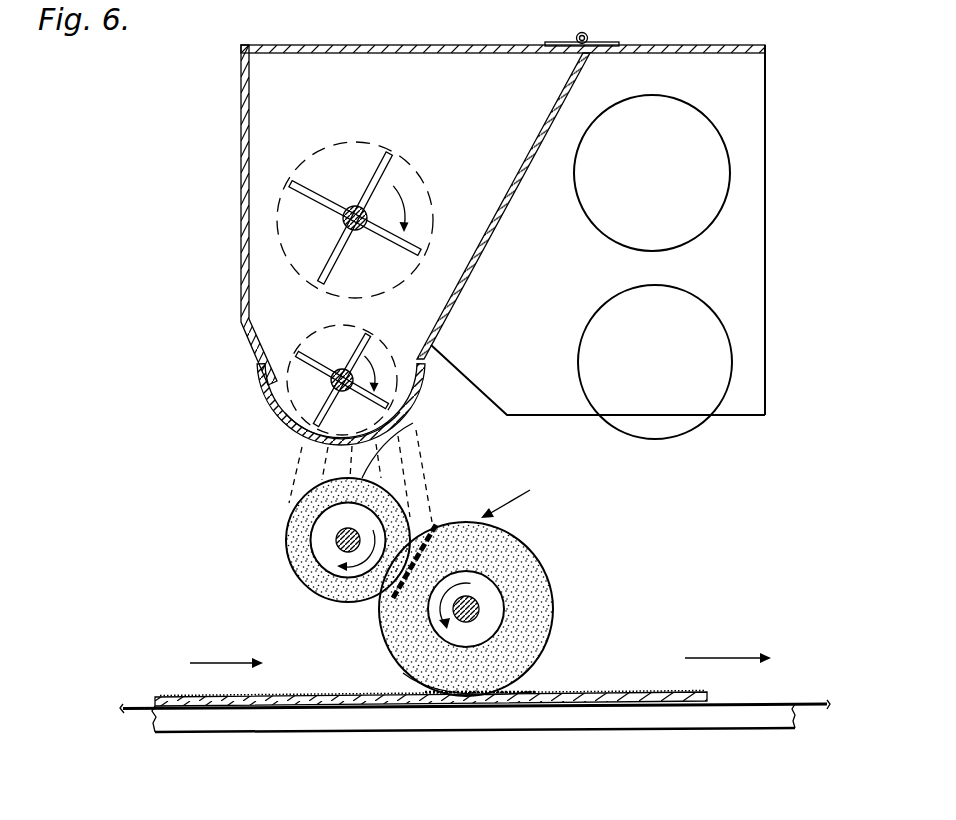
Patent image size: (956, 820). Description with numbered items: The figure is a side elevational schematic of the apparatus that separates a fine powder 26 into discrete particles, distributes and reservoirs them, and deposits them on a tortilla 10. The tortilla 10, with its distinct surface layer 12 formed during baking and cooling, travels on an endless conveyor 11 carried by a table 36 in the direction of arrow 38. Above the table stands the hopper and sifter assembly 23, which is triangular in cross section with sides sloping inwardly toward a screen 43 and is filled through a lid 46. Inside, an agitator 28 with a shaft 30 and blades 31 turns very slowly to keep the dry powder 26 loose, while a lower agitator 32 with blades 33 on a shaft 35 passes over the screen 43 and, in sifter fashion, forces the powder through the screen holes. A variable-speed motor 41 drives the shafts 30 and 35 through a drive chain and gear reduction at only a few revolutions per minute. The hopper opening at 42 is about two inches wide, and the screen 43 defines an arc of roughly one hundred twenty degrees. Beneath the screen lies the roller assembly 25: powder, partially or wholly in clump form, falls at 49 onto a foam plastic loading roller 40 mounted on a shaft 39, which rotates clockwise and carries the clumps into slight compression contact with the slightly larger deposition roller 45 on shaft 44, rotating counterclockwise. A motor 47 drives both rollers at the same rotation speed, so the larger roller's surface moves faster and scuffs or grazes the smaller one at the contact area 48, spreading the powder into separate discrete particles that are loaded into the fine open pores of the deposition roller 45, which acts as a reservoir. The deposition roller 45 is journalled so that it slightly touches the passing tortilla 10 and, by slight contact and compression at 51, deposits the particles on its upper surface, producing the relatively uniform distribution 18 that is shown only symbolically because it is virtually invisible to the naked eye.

The tortilla 10 is at (305, 677).
The conveyor 11 is at (800, 703).
The surface layer 12 is at (170, 697).
The distribution of particles 18 is at (585, 692).
The hopper and sifter assembly 23 is at (234, 194).
The roller assembly 25 is at (522, 496).
The powder 26 is at (422, 476).
The agitator 28 is at (355, 203).
The shaft 30 is at (352, 207).
The blades 31 is at (333, 262).
The lower agitator 32 is at (353, 371).
The blades 33 is at (318, 415).
The shaft 35 is at (338, 373).
The table 36 is at (292, 733).
The arrow 38 is at (714, 657).
The shaft 39 is at (338, 549).
The loading roller 40 is at (326, 552).
The motor 41 is at (579, 203).
The hopper opening 42 is at (298, 418).
The screen 43 is at (316, 440).
The shaft 44 is at (480, 610).
The deposition roller 45 is at (491, 609).
The lid 46 is at (296, 45).
The motor 47 is at (579, 353).
The contact area 48 is at (395, 598).
The powder fall location 49 is at (395, 432).
The deposition contact point 51 is at (403, 673).